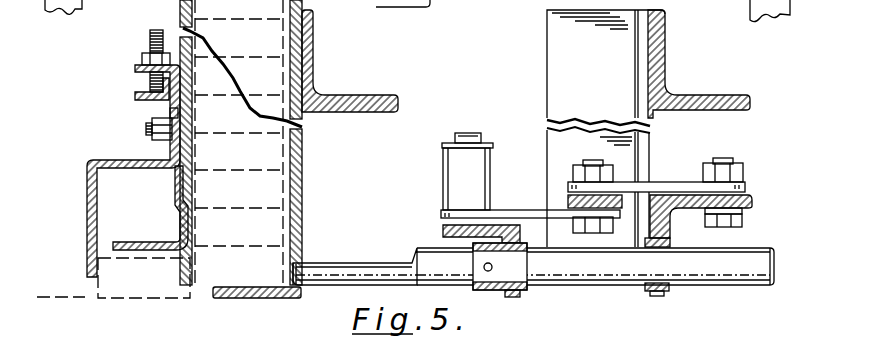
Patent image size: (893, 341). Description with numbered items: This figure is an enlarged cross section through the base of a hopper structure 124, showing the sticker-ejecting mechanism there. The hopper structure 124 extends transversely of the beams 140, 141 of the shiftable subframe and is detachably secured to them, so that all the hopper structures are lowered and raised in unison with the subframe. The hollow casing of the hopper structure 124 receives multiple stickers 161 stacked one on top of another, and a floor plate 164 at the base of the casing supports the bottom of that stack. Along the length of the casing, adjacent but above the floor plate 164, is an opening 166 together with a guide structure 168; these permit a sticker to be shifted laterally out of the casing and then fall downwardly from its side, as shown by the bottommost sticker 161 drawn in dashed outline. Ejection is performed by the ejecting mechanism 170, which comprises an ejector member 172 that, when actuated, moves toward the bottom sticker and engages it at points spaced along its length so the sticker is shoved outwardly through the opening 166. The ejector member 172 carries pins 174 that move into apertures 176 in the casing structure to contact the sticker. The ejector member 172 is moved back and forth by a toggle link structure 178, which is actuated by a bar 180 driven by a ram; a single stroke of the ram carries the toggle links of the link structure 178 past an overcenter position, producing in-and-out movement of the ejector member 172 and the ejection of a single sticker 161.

The hopper structure 124 is at (352, 63).
The beam 140 is at (87, 7).
The beam 141 is at (750, 1).
The sticker 161 is at (258, 135).
The floor plate 164 is at (240, 297).
The opening 166 is at (192, 249).
The guide structure 168 is at (144, 228).
The ejecting mechanism 170 is at (550, 293).
The ejector member 172 is at (441, 229).
The pin 174 is at (385, 263).
The aperture 176 is at (300, 286).
The toggle link structure 178 is at (530, 209).
The bar 180 is at (567, 200).